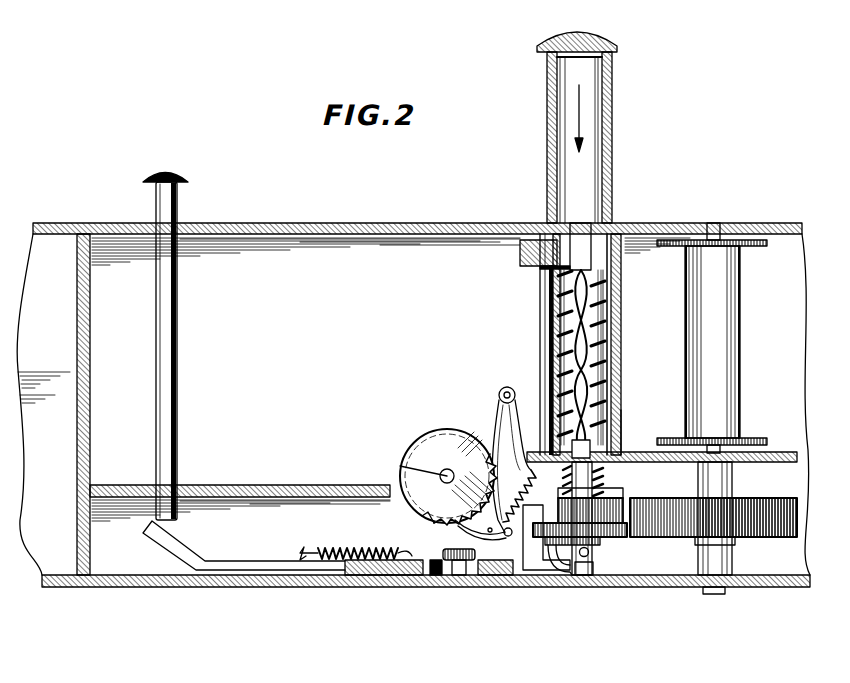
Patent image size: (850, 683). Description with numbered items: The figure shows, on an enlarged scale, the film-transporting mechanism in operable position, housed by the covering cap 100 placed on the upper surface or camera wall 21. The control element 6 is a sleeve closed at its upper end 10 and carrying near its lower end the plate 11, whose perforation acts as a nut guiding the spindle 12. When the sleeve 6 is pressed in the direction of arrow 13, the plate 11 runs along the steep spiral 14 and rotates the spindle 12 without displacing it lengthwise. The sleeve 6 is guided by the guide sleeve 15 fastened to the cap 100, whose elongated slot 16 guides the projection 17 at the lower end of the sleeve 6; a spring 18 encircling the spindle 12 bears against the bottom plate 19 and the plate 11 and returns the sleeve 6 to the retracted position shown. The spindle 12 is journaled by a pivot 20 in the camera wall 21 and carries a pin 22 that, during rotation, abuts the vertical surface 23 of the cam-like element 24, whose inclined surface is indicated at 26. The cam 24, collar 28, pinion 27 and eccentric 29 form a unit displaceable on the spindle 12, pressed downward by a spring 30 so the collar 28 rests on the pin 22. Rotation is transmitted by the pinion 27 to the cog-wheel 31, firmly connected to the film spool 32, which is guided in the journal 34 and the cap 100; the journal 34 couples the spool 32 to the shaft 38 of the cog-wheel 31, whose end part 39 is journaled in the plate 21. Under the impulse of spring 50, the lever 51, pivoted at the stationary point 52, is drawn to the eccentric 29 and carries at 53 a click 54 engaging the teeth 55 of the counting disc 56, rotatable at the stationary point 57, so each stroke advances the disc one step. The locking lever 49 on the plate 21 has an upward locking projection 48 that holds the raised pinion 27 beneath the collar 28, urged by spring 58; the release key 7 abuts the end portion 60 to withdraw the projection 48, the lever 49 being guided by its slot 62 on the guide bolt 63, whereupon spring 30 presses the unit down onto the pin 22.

The control element 6 is at (612, 122).
The release key 7 is at (176, 203).
The upper end 10 is at (605, 44).
The plate 11 is at (620, 206).
The spindle 12 is at (578, 224).
The arrow 13 is at (580, 100).
The steep spiral 14 is at (598, 318).
The guide sleeve 15 is at (618, 275).
The elongated slot 16 is at (546, 300).
The projection 17 is at (520, 258).
The spring 18 is at (608, 334).
The bottom plate 19 is at (628, 428).
The pivot 20 is at (588, 575).
The camera wall 21 is at (203, 588).
The pin 22 is at (598, 568).
The vertical surface 23 is at (580, 560).
The cam-like element 24 is at (545, 568).
The inclined surface 26 is at (565, 560).
The pinion 27 is at (600, 540).
The collar 28 is at (610, 532).
The eccentric 29 is at (625, 496).
The spring 30 is at (603, 492).
The cog-wheel 31 is at (797, 508).
The film spool 32 is at (722, 322).
The journal 34 is at (722, 438).
The shaft 38 is at (736, 552).
The end part 39 is at (710, 594).
The locking projection 48 is at (543, 545).
The locking lever 49 is at (358, 578).
The spring 50 is at (501, 445).
The lever 51 is at (499, 396).
The stationary point 52 is at (507, 391).
The click mounting point 53 is at (492, 562).
The click 54 is at (475, 535).
The teeth 55 is at (426, 520).
The counting disc 56 is at (438, 490).
The stationary point 57 is at (406, 463).
The spring 58 is at (346, 556).
The end portion 60 is at (174, 536).
The slot 62 is at (423, 578).
The guide bolt 63 is at (458, 575).
The covering cap 100 is at (780, 224).